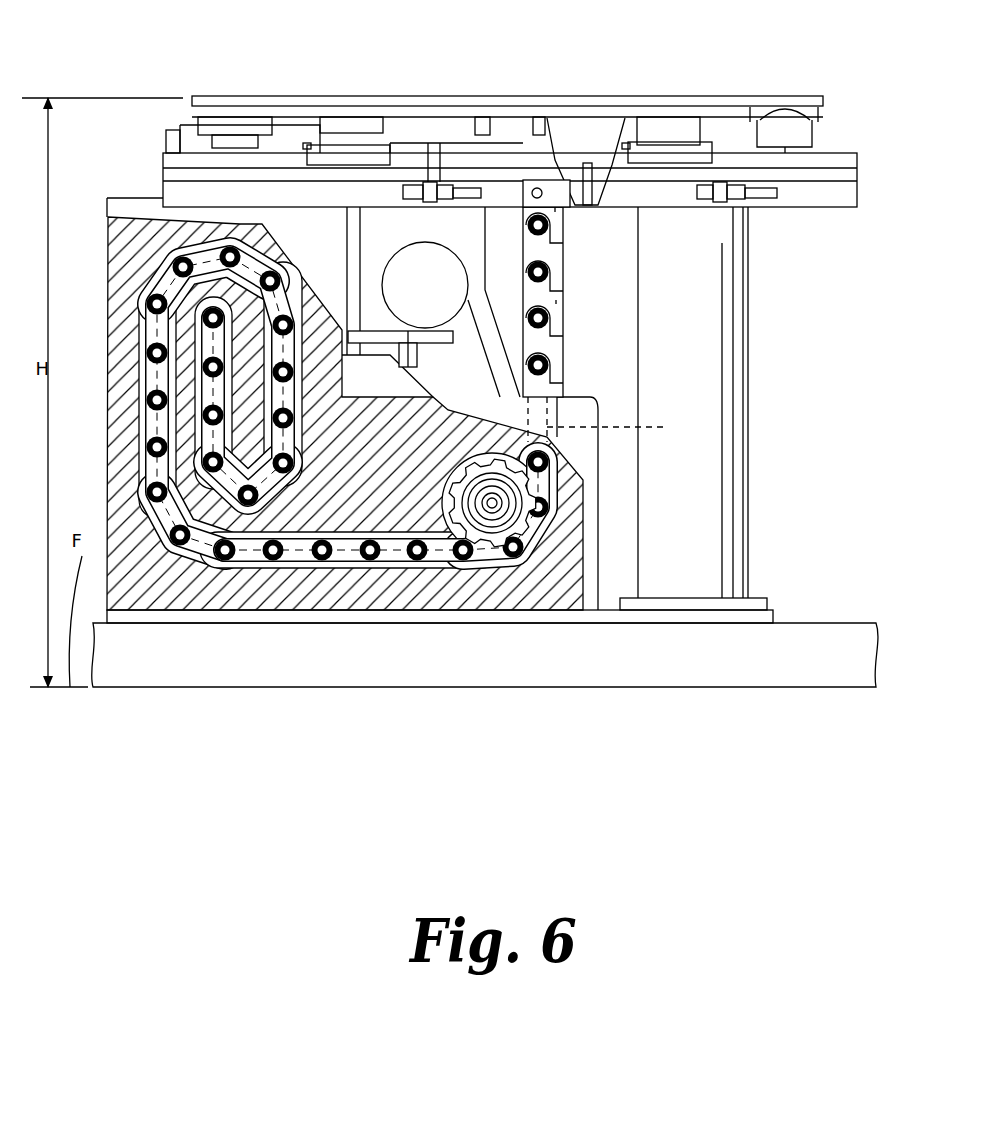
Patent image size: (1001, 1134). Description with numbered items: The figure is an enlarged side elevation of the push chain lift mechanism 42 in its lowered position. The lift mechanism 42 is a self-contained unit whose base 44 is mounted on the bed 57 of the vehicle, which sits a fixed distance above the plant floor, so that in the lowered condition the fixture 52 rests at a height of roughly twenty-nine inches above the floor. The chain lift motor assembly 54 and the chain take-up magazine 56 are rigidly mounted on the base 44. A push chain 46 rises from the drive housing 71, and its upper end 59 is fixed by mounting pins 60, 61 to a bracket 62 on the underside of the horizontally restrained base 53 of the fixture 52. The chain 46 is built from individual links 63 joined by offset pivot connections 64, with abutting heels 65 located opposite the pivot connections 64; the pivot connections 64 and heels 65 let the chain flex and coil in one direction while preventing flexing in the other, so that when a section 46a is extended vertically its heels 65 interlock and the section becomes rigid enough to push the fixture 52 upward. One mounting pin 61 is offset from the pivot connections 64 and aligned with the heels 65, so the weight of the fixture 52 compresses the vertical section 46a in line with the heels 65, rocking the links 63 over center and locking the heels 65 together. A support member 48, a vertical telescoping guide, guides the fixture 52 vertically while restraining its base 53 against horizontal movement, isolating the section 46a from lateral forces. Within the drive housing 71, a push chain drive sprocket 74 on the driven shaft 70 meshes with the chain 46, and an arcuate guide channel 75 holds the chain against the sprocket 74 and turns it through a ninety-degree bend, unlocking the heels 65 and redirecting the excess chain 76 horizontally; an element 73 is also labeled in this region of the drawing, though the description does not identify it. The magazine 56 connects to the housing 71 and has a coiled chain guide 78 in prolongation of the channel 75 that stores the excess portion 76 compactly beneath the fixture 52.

The lift mechanism 42 is at (787, 302).
The base 44 is at (765, 620).
The push chain 46 is at (567, 287).
The vertical section of push chain 46a is at (563, 328).
The support member 48 is at (708, 361).
The fixture 52 is at (829, 132).
The base of fixture 53 is at (847, 193).
The chain lift motor assembly 54 is at (431, 308).
The chain take-up magazine 56 is at (100, 245).
The bed 57 is at (853, 624).
The upper end of push chain 59 is at (563, 228).
The mounting pin 60 is at (537, 188).
The mounting pin 61 is at (557, 188).
The bracket 62 is at (500, 190).
The links 63 is at (528, 348).
The offset pivot connections 64 is at (550, 363).
The heels 65 is at (562, 350).
The driven shaft 70 is at (492, 510).
The drive housing 71 is at (598, 488).
The guide plate 73 is at (510, 383).
The push chain drive sprocket 74 is at (530, 540).
The arcuate guide channel 75 is at (610, 419).
The excess chain 76 is at (285, 570).
The chain guide 78 is at (210, 297).